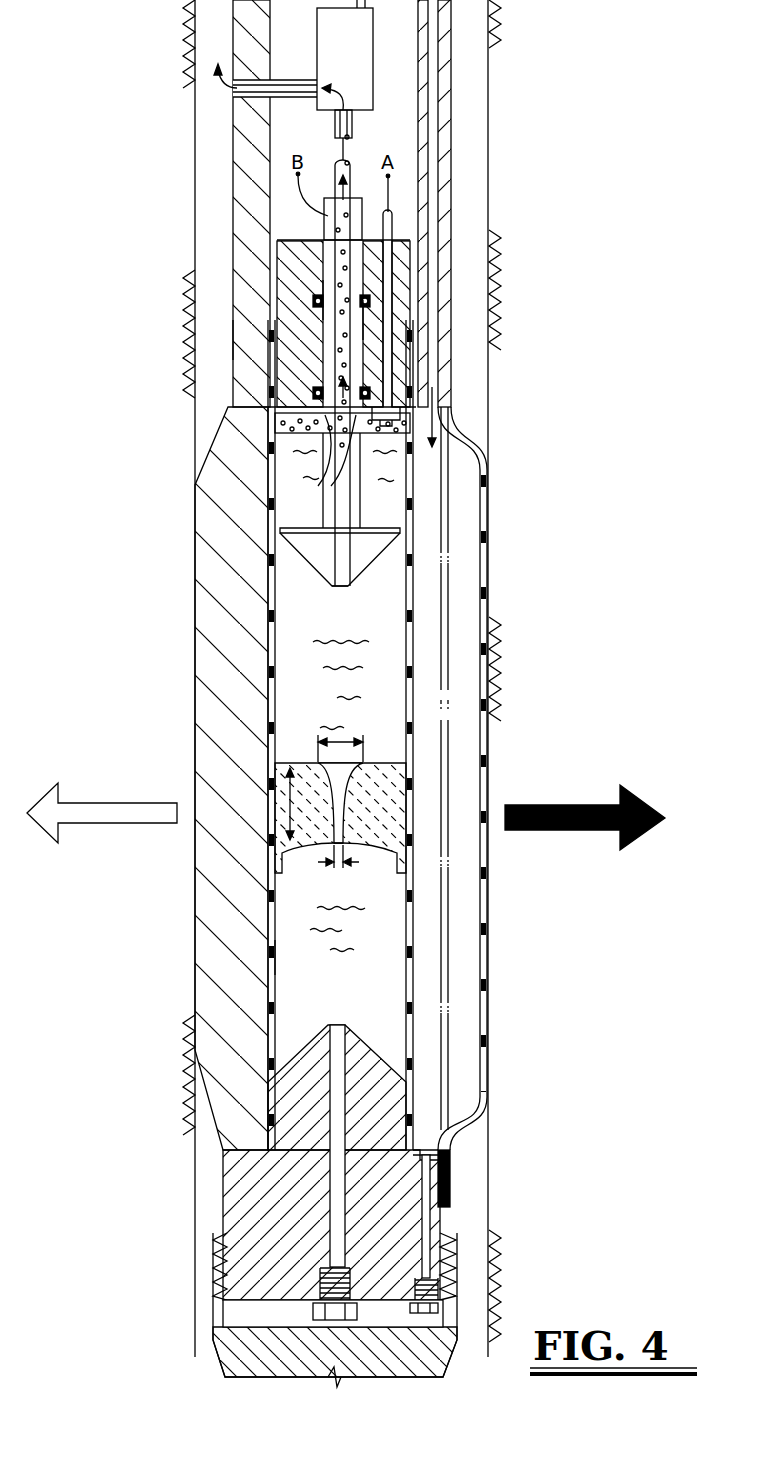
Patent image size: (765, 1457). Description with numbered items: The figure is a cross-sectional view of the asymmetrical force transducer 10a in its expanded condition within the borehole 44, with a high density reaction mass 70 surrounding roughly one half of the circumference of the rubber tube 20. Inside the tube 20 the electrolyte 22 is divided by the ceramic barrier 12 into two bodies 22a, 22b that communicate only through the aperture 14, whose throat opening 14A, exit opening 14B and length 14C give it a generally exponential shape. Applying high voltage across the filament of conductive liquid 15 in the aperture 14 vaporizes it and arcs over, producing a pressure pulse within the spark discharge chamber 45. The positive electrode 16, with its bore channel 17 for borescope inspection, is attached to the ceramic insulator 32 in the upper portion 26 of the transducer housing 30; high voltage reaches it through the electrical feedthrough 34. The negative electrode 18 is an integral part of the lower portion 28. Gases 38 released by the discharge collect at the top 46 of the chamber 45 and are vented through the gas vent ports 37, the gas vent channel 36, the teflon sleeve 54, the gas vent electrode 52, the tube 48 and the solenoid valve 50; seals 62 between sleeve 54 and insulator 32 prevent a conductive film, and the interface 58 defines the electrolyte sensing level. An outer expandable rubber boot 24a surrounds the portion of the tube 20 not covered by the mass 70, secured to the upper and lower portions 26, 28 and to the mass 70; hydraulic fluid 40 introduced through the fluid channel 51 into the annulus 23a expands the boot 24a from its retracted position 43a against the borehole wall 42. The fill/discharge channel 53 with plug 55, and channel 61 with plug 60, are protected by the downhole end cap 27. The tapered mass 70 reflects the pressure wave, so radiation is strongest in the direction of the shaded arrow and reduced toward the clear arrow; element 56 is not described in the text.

The asymmetrical force transducer 10a is at (468, 329).
The ceramic barrier 12 is at (386, 772).
The aperture 14 is at (352, 785).
The throat opening 14A is at (341, 871).
The exit opening 14B is at (341, 732).
The length of aperture 14C is at (299, 804).
The filament of conductive liquid 15 is at (340, 824).
The positive electrode 16 is at (372, 557).
The bore channel 17 is at (342, 587).
The negative electrode 18 is at (368, 1065).
The rubber tube 20 is at (410, 679).
The electrolyte 22 is at (385, 672).
The electrolyte body 22a is at (390, 717).
The electrolyte body 22b is at (400, 958).
The annulus 23a is at (462, 1028).
The outer expandable rubber boot 24a is at (483, 887).
The upper portion 26 is at (243, 342).
The downhole end cap 27 is at (438, 1353).
The lower portion 28 is at (242, 1188).
The transducer housing 30 is at (233, 241).
The ceramic insulator 32 is at (310, 240).
The electrical feedthrough 34 is at (390, 253).
The gas vent channel 36 is at (337, 353).
The gas vent ports 37 is at (324, 470).
The gases 38 is at (300, 425).
The hydraulic fluid 40 is at (457, 985).
The borehole wall 42 is at (496, 188).
The retracted position of boot 43a is at (447, 800).
The borehole 44 is at (486, 124).
The spark discharge chamber 45 is at (387, 623).
The top of electrolyte chamber 46 is at (382, 427).
The tube 48 is at (348, 168).
The solenoid valve 50 is at (358, 73).
The fluid channel 51 is at (435, 66).
The gas vent electrode 52 is at (367, 209).
The hydraulic fluid fill/discharge channel 53 is at (425, 1231).
The teflon sleeve 54 is at (357, 322).
The plug 55 is at (412, 1307).
The tube wall 56 is at (276, 957).
The interface 58 is at (325, 312).
The plug 60 is at (313, 1311).
The channel 61 is at (338, 1026).
The seals 62 is at (313, 299).
The reaction mass 70 is at (208, 558).